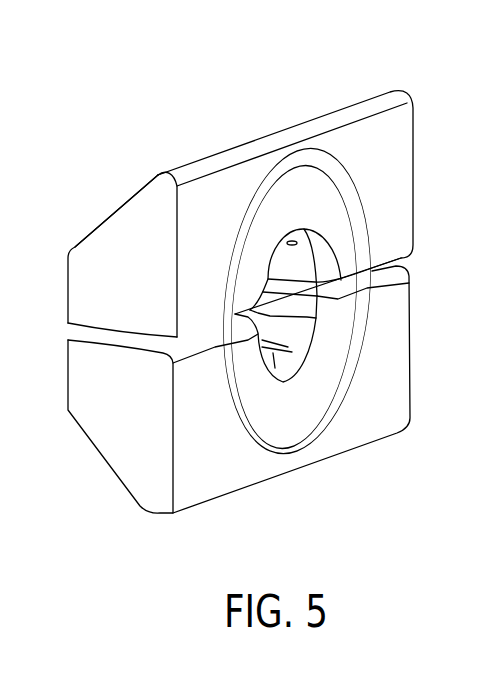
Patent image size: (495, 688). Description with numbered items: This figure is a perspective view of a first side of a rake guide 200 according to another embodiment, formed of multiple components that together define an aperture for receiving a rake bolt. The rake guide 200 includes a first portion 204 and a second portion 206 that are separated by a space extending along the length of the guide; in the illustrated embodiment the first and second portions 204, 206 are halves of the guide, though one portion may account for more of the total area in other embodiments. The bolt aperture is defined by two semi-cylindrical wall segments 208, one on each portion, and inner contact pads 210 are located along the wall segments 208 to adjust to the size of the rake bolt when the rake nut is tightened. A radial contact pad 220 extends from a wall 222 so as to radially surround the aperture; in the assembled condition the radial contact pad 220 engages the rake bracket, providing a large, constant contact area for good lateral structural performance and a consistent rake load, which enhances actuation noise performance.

The rake guide 200 is at (216, 86).
The first portion 204 is at (403, 135).
The second portion 206 is at (378, 401).
The semi-cylindrical wall segments 208 is at (300, 263).
The inner contact pads 210 is at (311, 326).
The radial contact pad 220 is at (311, 190).
The wall 222 is at (203, 223).